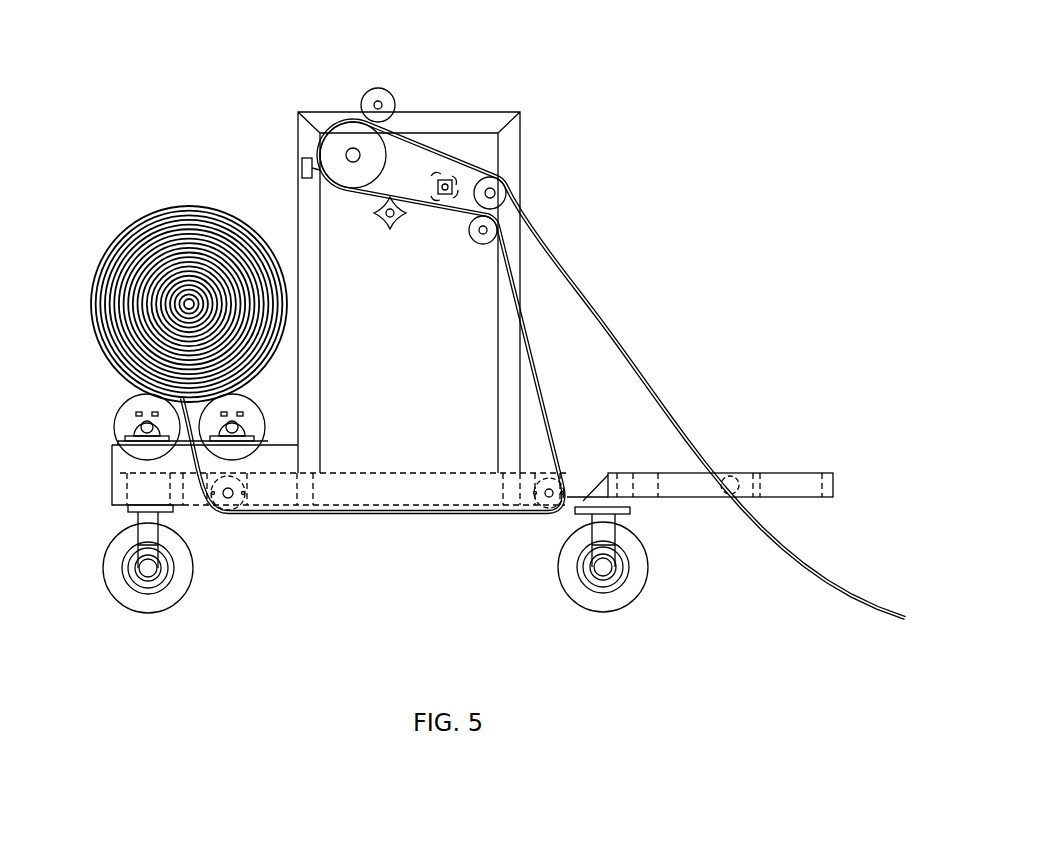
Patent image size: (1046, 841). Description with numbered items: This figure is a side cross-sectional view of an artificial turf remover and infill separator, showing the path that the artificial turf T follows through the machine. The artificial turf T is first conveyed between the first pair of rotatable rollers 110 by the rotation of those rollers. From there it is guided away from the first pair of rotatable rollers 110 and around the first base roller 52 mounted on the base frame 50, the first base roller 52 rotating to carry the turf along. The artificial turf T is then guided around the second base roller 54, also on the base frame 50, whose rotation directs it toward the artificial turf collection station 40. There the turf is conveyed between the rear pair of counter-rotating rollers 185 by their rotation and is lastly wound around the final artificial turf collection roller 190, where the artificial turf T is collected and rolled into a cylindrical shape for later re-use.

The artificial turf collection station 40 is at (121, 103).
The final artificial turf collection roller 190 is at (190, 300).
The rear pair of counter-rotating rollers 185 is at (118, 425).
The first pair of rotatable rollers 110 is at (497, 238).
The artificial turf T is at (637, 368).
The base frame 50 is at (405, 493).
The first base roller 52 is at (545, 500).
The second base roller 54 is at (243, 510).